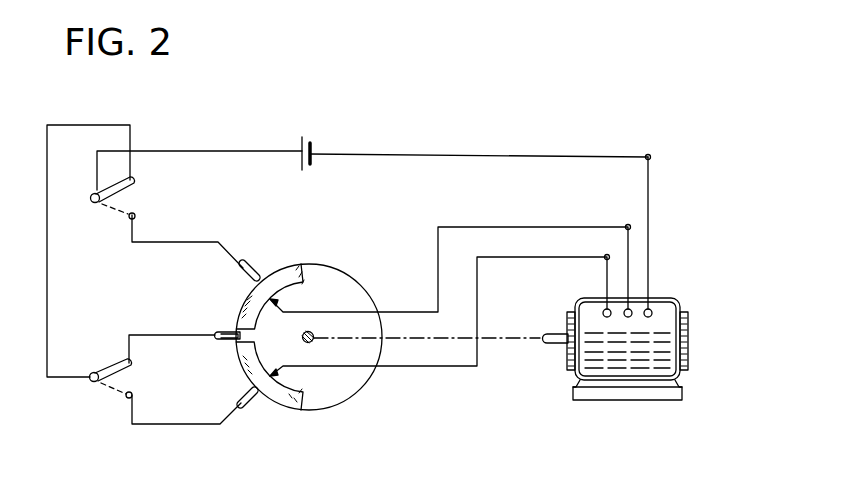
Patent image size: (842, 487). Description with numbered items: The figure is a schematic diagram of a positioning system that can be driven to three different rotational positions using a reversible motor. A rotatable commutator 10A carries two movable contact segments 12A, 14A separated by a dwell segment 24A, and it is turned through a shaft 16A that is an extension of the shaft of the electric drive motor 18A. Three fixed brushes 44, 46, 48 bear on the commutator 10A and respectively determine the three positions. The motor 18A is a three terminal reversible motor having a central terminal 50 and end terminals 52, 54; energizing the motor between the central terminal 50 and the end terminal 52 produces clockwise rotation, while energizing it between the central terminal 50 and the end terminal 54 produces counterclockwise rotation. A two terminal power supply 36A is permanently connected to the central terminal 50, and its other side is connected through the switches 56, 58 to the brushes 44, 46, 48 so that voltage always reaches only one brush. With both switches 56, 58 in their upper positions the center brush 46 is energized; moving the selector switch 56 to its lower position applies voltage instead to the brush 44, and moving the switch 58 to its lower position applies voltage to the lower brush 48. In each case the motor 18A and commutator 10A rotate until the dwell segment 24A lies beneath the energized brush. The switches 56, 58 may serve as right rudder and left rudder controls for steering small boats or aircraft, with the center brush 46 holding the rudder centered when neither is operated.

The commutator 10A is at (353, 290).
The commutator contact segment 12A is at (248, 302).
The commutator contact segment 14A is at (292, 406).
The shaft 16A is at (452, 341).
The three terminal reversible motor 18A is at (625, 365).
The dwell segment 24A is at (243, 326).
The two terminal power supply 36A is at (300, 144).
The brush 44 is at (254, 270).
The center brush 46 is at (224, 341).
The lower brush 48 is at (248, 405).
The central terminal 50 is at (650, 155).
The end terminal 52 is at (634, 212).
The end terminal 54 is at (608, 255).
The selector switch 56 is at (126, 190).
The switch 58 is at (116, 367).